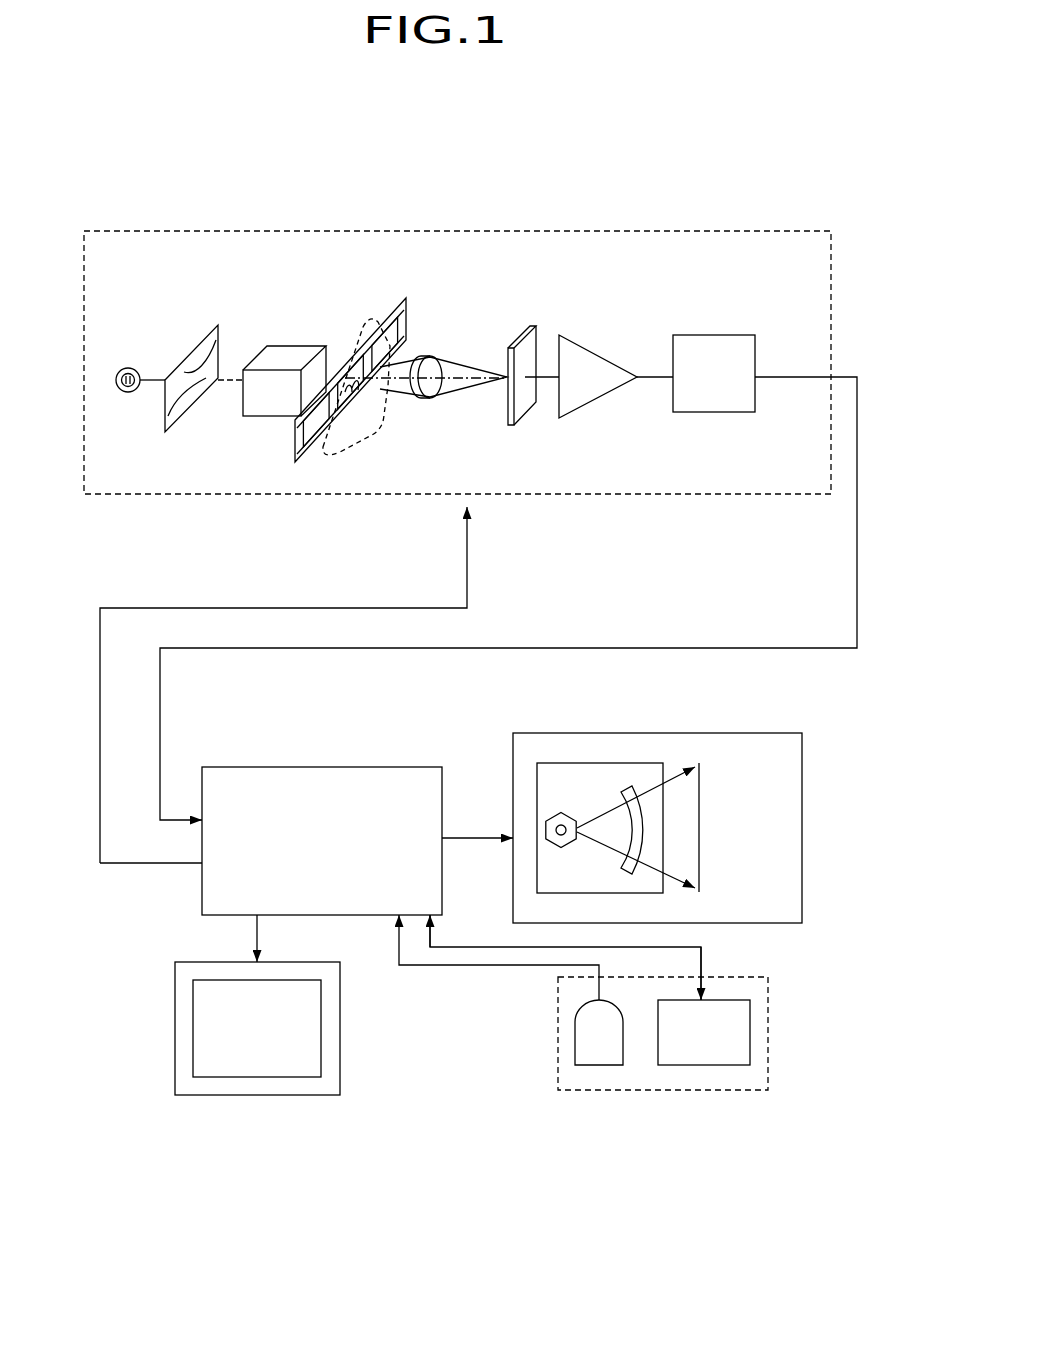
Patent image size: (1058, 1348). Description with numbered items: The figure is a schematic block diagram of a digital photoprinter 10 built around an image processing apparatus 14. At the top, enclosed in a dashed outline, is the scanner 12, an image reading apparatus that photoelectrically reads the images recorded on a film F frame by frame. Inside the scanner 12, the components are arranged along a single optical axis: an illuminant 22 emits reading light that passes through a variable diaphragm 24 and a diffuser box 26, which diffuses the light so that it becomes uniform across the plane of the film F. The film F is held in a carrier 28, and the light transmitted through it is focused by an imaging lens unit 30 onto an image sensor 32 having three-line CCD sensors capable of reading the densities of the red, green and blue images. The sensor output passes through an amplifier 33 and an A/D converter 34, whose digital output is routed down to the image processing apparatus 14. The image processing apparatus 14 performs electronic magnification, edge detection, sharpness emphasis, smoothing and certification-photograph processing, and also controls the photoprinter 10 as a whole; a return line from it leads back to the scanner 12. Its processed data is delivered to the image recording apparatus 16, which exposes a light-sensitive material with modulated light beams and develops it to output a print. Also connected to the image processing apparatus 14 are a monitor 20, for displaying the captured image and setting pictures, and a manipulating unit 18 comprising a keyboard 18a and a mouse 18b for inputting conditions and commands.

The digital photoprinter 10 is at (653, 205).
The scanner 12 is at (233, 231).
The image processing apparatus 14 is at (318, 767).
The image recording apparatus 16 is at (653, 733).
The manipulating unit 18 is at (647, 1090).
The keyboard 18a is at (707, 1065).
The mouse 18b is at (600, 1065).
The monitor 20 is at (252, 1095).
The illuminant 22 is at (128, 368).
The variable diaphragm 24 is at (200, 343).
The diffuser box 26 is at (280, 362).
The carrier 28 is at (384, 423).
The imaging lens unit 30 is at (430, 355).
The image sensor 32 is at (525, 350).
The amplifier 33 is at (600, 405).
The A/D converter 34 is at (718, 412).
The film F is at (397, 318).